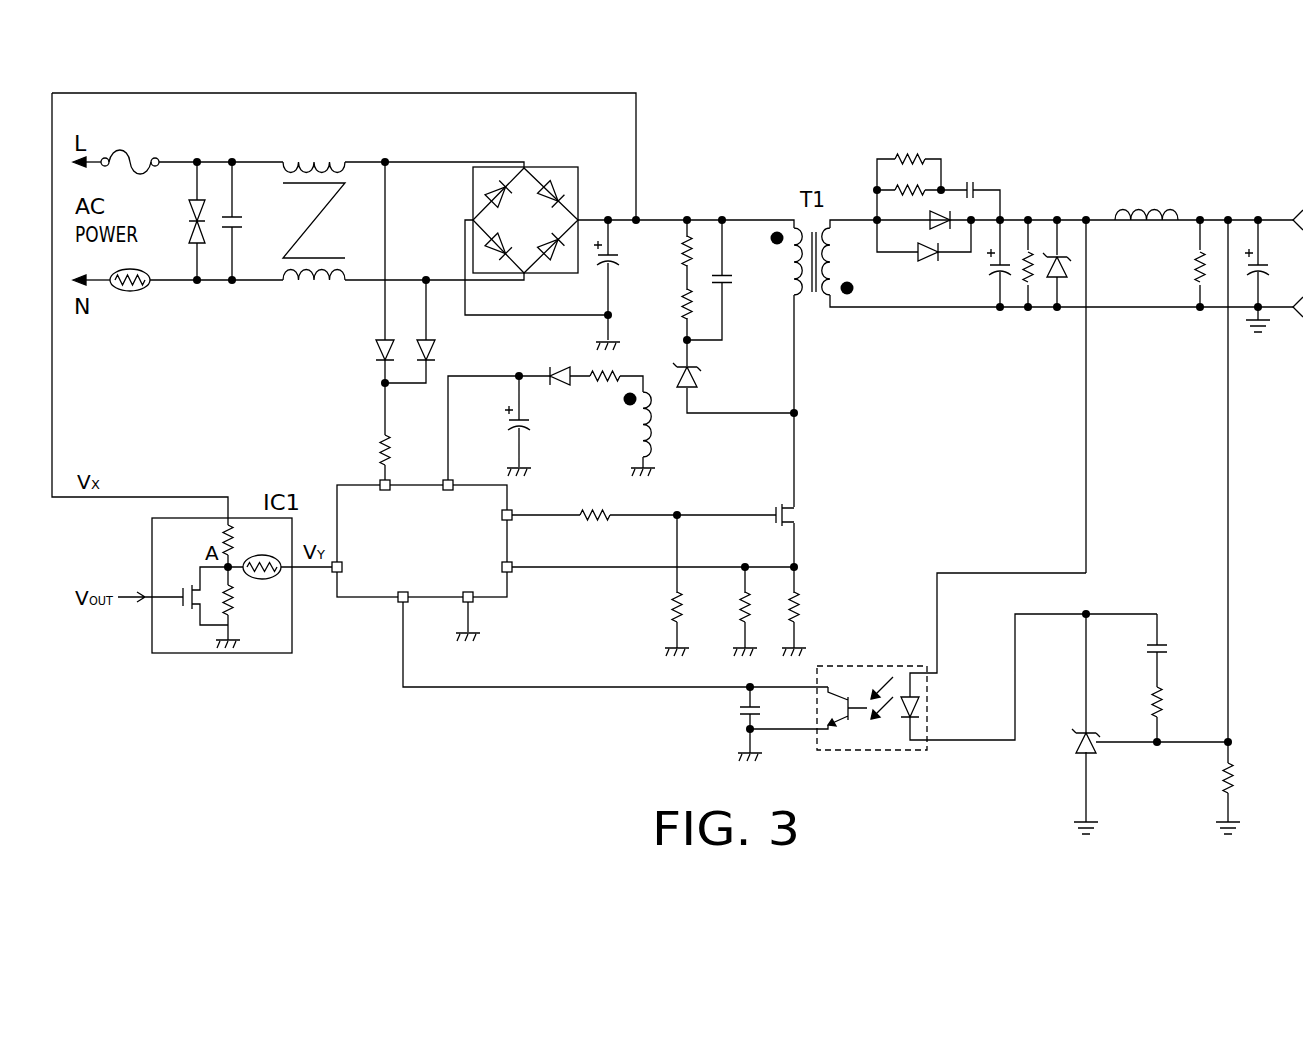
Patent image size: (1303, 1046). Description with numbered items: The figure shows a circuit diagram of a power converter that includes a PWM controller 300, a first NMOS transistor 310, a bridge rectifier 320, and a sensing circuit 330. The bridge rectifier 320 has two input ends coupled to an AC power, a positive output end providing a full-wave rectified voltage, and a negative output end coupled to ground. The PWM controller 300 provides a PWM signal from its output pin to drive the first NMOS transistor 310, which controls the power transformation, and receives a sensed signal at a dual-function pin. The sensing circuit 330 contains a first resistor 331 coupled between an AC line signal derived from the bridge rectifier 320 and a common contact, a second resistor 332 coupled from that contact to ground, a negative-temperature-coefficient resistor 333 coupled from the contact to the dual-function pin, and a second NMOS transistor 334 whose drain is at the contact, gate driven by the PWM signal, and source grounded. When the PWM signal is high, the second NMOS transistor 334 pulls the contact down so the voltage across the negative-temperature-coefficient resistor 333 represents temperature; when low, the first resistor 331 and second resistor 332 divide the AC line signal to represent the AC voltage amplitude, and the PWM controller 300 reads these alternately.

The PWM controller 300 is at (337, 497).
The first NMOS transistor 310 is at (797, 515).
The bridge rectifier 320 is at (550, 167).
The sensing circuit 330 is at (230, 576).
The first resistor 331 is at (228, 525).
The second resistor 332 is at (235, 612).
The negative-temperature-coefficient resistor 333 is at (267, 580).
The second NMOS transistor 334 is at (188, 610).